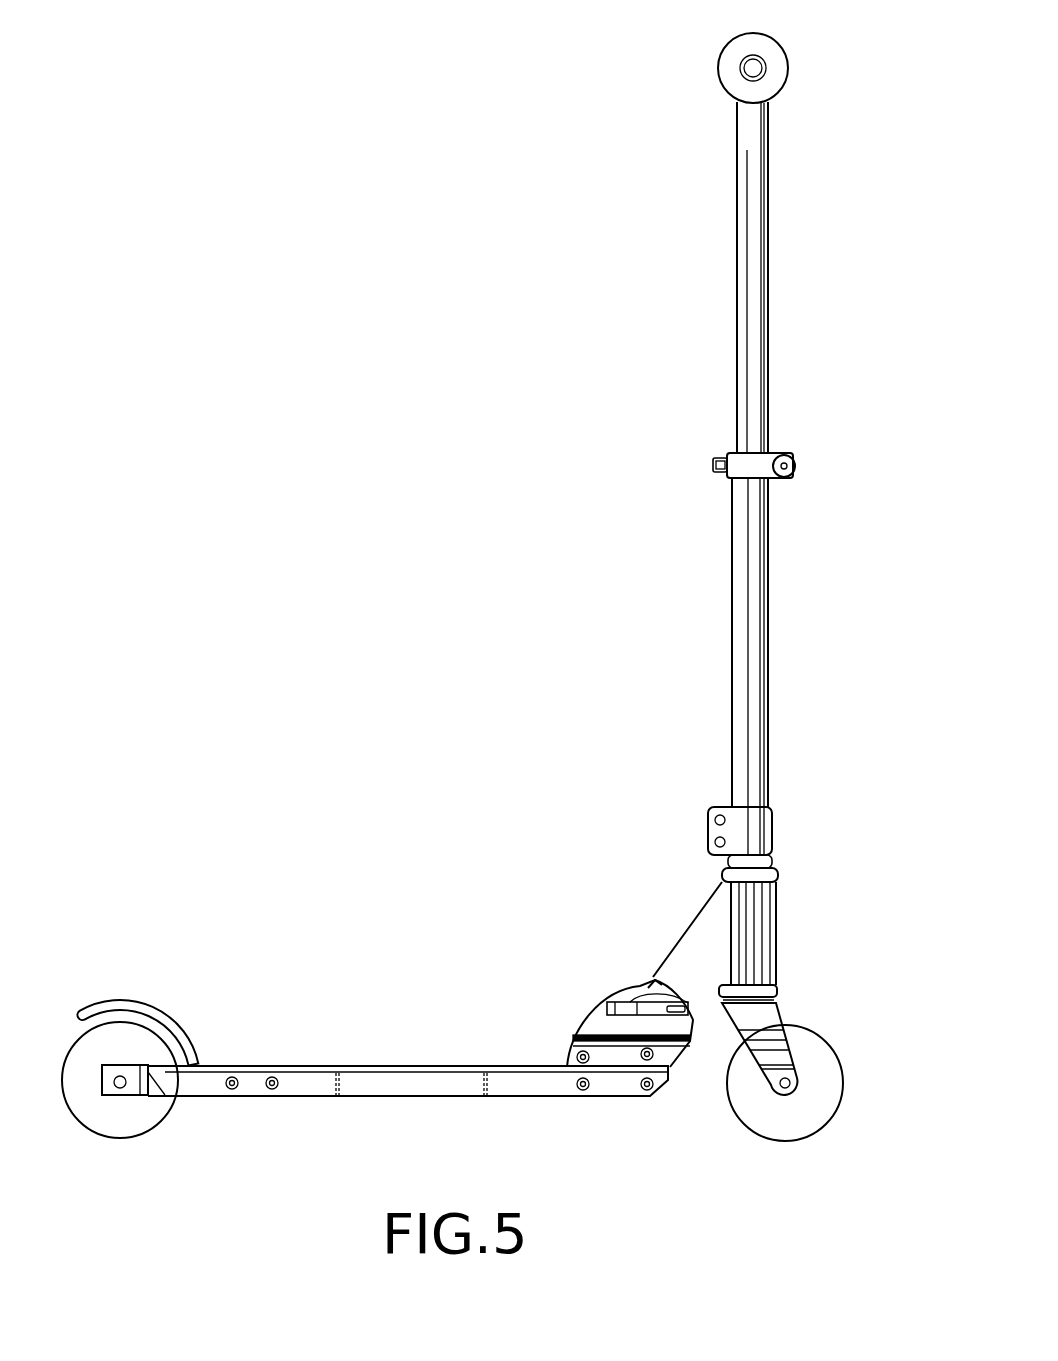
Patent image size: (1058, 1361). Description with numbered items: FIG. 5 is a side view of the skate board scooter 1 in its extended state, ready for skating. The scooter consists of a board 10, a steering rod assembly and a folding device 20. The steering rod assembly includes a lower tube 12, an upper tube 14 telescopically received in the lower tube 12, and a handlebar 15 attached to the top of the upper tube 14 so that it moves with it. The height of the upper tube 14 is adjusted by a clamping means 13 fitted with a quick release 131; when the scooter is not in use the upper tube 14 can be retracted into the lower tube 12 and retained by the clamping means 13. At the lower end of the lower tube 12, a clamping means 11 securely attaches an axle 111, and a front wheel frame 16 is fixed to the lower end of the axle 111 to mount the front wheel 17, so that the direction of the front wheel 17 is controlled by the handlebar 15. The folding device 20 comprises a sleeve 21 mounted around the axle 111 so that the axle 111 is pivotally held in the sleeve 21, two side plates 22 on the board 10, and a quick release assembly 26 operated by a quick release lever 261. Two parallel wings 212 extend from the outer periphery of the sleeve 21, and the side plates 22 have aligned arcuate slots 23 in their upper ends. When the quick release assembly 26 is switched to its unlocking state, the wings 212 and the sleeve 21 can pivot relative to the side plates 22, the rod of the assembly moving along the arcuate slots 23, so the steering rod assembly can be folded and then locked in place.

The scooter 1 is at (360, 678).
The board 10 is at (387, 1066).
The clamping means 11 is at (755, 830).
The axle 111 is at (778, 877).
The lower tube 12 is at (755, 570).
The clamping means 13 is at (752, 470).
The quick release 131 is at (807, 445).
The upper tube 14 is at (768, 202).
The handlebar 15 is at (787, 48).
The front wheel frame 16 is at (760, 1025).
The front wheel 17 is at (820, 1098).
The folding device 20 is at (599, 971).
The sleeve 21 is at (790, 897).
The wings 212 is at (710, 928).
The side plates 22 is at (590, 1027).
The arcuate slots 23 is at (602, 1020).
The quick release assembly 26 is at (630, 1025).
The quick release lever 261 is at (650, 1010).